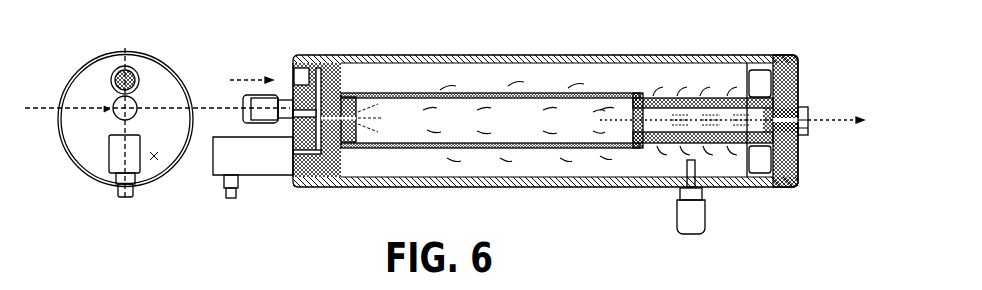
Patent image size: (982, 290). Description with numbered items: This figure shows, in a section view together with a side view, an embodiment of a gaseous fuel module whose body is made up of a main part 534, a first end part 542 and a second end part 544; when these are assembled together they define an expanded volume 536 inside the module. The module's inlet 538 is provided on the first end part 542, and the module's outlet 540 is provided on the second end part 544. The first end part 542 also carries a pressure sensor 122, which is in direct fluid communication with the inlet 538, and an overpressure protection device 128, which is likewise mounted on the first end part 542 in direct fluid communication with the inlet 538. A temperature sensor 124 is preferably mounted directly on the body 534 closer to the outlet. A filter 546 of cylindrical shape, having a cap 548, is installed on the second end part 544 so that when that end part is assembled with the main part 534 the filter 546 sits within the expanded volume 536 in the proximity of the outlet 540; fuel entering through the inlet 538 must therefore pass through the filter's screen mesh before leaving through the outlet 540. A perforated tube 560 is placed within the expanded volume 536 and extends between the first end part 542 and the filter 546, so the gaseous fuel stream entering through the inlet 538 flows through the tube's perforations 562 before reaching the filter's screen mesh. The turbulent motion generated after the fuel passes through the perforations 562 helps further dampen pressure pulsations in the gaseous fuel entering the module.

The pressure sensor 122 is at (262, 103).
The temperature sensor 124 is at (710, 226).
The overpressure protection device 128 is at (228, 162).
The main part 534 is at (550, 54).
The expanded volume 536 is at (630, 90).
The inlet 538 is at (133, 72).
The outlet 540 is at (813, 117).
The first end part 542 is at (312, 54).
The second end part 544 is at (782, 54).
The filter 546 is at (700, 144).
The cap 548 is at (636, 96).
The perforated tube 560 is at (396, 90).
The perforations 562 is at (461, 92).